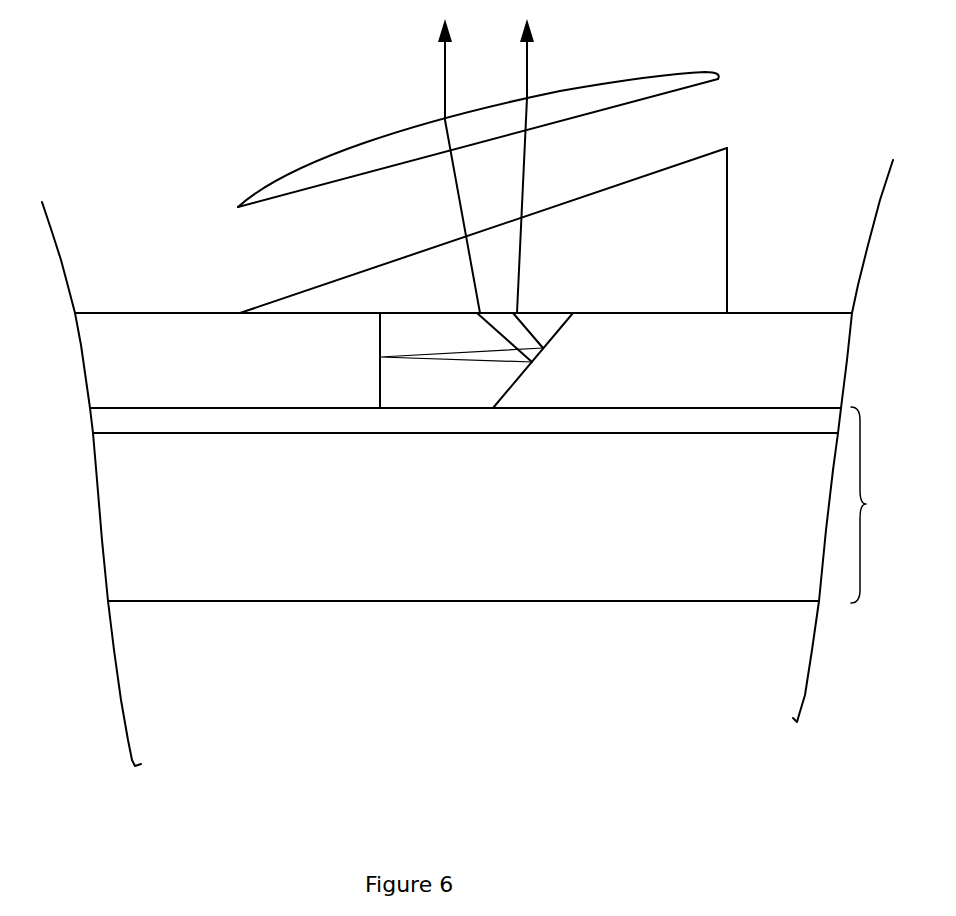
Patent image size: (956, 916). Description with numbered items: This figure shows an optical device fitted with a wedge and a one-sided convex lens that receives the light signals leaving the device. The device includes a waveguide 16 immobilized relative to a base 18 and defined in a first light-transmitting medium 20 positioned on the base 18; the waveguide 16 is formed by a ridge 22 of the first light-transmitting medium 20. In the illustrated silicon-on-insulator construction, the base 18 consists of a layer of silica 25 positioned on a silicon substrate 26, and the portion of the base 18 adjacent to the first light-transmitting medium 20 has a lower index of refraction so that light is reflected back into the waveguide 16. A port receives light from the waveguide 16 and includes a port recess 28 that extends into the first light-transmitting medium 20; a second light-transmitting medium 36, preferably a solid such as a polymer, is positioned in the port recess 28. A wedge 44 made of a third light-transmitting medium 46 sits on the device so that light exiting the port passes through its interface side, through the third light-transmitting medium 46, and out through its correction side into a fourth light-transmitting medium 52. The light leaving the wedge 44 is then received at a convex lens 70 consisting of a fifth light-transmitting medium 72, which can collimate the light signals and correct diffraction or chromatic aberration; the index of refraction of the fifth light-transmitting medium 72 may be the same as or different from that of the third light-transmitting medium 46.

The waveguide 16 is at (73, 363).
The base 18 is at (879, 505).
The first light-transmitting medium 20 is at (761, 340).
The ridge 22 is at (128, 312).
The layer of silica 25 is at (285, 420).
The silicon substrate 26 is at (207, 580).
The port recess 28 is at (555, 365).
The second light-transmitting medium 36 is at (393, 330).
The wedge 44 is at (516, 196).
The third light-transmitting medium 46 is at (650, 195).
The fourth light-transmitting medium 52 is at (395, 220).
The convex lens 70 is at (462, 110).
The fifth light-transmitting medium 72 is at (568, 102).